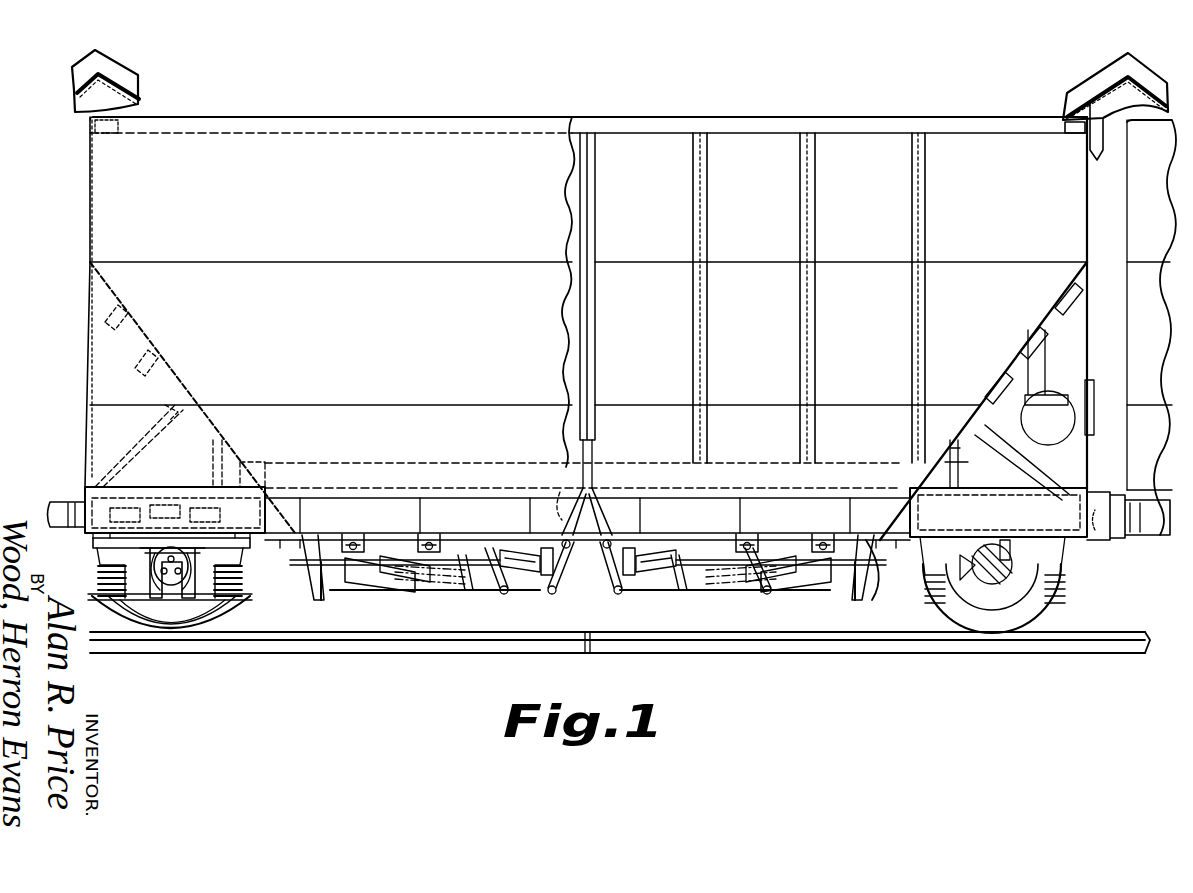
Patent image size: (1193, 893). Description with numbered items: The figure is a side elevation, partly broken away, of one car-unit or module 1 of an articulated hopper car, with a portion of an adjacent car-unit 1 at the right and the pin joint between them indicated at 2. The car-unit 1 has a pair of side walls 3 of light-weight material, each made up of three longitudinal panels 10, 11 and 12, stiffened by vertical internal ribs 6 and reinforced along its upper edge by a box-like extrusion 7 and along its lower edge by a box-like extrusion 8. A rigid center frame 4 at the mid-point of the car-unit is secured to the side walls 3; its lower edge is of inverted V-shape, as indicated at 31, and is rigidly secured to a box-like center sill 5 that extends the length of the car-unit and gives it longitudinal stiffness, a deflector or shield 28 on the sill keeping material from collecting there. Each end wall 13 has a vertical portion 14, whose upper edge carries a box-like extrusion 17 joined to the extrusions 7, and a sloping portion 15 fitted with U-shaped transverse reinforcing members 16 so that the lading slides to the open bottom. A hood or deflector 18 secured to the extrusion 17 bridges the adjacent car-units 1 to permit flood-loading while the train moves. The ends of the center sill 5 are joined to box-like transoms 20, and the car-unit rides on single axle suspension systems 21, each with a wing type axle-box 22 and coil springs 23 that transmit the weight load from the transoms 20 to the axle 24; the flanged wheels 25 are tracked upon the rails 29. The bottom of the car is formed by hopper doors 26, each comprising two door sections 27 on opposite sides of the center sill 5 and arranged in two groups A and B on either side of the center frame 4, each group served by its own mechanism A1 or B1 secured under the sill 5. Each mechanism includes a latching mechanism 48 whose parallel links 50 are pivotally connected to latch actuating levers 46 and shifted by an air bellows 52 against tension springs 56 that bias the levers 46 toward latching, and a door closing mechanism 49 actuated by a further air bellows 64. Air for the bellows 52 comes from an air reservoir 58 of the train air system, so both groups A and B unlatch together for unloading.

The car-unit 1 is at (572, 57).
The pin joint 2 is at (1112, 487).
The side walls 3 is at (445, 245).
The center frame 4 is at (597, 343).
The center sill 5 is at (664, 496).
The vertical internal ribs 6 is at (708, 180).
The upper box-like extrusion 7 is at (420, 122).
The lower box-like extrusion 8 is at (452, 495).
The upper panel 10 is at (1146, 190).
The middle panel 11 is at (1142, 288).
The lower panel 12 is at (1145, 411).
The end walls 13 is at (82, 221).
The vertical portion of end wall 14 is at (95, 192).
The sloping portion of end wall 15 is at (127, 321).
The transverse reinforcing members 16 is at (152, 364).
The end wall box-like extrusion 17 is at (113, 133).
The hood or deflector 18 is at (120, 78).
The transoms 20 is at (178, 486).
The single axle suspension system 21 is at (80, 559).
The wing type axle-box 22 is at (225, 605).
The coil springs 23 is at (108, 580).
The axle 24 is at (172, 575).
The wheels 25 is at (172, 633).
The hopper doors 26 is at (465, 535).
The door sections 27 is at (387, 538).
The deflector or shield 28 is at (498, 463).
The rails 29 is at (596, 642).
The V-shaped lower edge 31 is at (594, 515).
The latch actuating levers 46 is at (508, 595).
The latching mechanism 48 is at (548, 595).
The door closing mechanism 49 is at (460, 586).
The parallel links 50 is at (420, 592).
The air bellows 52 is at (322, 600).
The tension springs 56 is at (365, 595).
The air reservoir 58 is at (1019, 415).
The door closing air bellows 64 is at (542, 548).
The first door group A is at (405, 538).
The second door group B is at (705, 535).
The door mechanism for group A A1 is at (420, 628).
The door mechanism for group B B1 is at (742, 620).